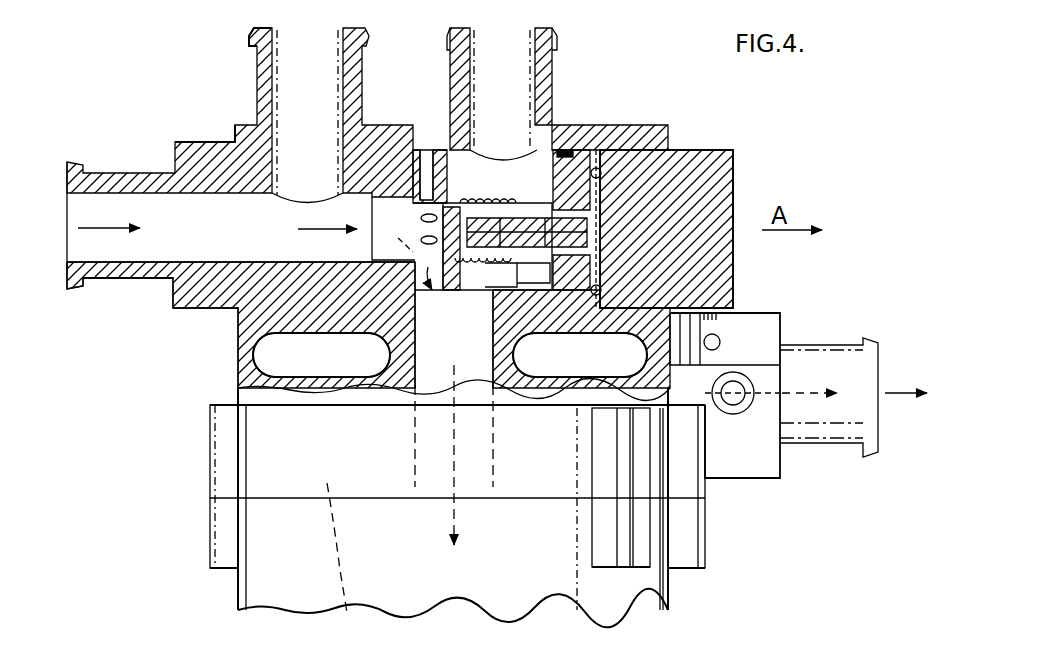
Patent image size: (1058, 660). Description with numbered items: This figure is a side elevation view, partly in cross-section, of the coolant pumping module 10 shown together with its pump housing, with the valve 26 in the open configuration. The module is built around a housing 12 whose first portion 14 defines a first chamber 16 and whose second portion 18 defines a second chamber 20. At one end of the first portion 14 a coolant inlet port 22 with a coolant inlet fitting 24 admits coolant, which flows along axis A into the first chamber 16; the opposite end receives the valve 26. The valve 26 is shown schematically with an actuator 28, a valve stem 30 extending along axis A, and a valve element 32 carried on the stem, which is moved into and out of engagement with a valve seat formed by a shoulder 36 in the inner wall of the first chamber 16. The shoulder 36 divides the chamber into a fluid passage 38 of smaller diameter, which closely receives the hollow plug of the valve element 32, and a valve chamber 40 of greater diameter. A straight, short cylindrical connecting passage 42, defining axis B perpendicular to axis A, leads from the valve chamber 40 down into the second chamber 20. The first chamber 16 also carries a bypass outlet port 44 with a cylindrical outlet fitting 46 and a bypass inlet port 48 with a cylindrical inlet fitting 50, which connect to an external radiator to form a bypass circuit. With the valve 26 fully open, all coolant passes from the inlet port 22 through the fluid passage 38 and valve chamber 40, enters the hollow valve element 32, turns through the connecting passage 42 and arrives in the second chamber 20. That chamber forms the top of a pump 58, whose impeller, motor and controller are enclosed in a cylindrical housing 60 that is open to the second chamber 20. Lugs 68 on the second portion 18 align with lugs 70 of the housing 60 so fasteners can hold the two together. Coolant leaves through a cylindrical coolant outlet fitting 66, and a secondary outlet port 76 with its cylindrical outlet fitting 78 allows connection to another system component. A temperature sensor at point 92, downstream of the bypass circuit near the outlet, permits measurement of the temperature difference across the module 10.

The coolant pumping module 10 is at (770, 170).
The housing 12 is at (210, 405).
The first portion 14 is at (175, 142).
The first chamber 16 is at (250, 207).
The second portion 18 is at (210, 470).
The second chamber 20 is at (349, 565).
The coolant inlet port 22 is at (162, 217).
The coolant inlet fitting 24 is at (110, 280).
The valve 26 is at (735, 195).
The actuator 28 is at (676, 240).
The valve stem 30 is at (505, 175).
The valve element 32 is at (423, 146).
The shoulder 36 is at (410, 163).
The fluid passage 38 is at (223, 243).
The valve chamber 40 is at (538, 335).
The connecting passage 42 is at (462, 341).
The bypass outlet port 44 is at (313, 205).
The cylindrical outlet fitting 46 is at (257, 72).
The bypass inlet port 48 is at (493, 160).
The cylindrical inlet fitting 50 is at (552, 62).
The pump 58 is at (712, 507).
The cylindrical housing 60 is at (670, 590).
The cylindrical coolant outlet fitting 66 is at (837, 344).
The lugs 68 is at (212, 440).
The lugs 70 is at (212, 545).
The secondary outlet port 76 is at (738, 390).
The cylindrical outlet fitting 78 is at (740, 415).
The point 92 is at (712, 333).